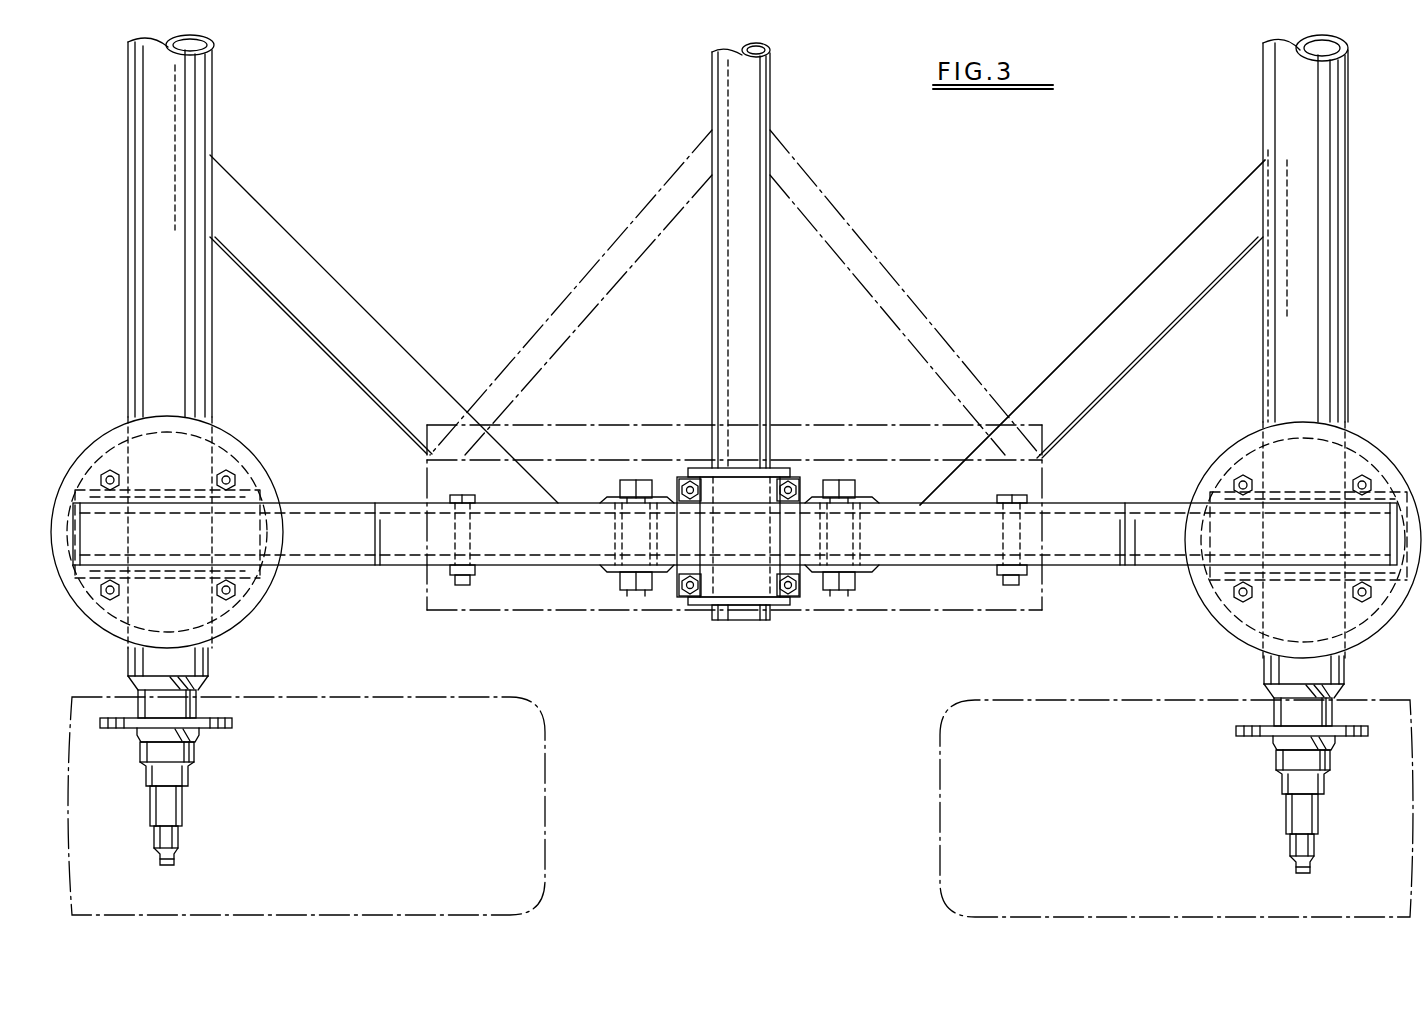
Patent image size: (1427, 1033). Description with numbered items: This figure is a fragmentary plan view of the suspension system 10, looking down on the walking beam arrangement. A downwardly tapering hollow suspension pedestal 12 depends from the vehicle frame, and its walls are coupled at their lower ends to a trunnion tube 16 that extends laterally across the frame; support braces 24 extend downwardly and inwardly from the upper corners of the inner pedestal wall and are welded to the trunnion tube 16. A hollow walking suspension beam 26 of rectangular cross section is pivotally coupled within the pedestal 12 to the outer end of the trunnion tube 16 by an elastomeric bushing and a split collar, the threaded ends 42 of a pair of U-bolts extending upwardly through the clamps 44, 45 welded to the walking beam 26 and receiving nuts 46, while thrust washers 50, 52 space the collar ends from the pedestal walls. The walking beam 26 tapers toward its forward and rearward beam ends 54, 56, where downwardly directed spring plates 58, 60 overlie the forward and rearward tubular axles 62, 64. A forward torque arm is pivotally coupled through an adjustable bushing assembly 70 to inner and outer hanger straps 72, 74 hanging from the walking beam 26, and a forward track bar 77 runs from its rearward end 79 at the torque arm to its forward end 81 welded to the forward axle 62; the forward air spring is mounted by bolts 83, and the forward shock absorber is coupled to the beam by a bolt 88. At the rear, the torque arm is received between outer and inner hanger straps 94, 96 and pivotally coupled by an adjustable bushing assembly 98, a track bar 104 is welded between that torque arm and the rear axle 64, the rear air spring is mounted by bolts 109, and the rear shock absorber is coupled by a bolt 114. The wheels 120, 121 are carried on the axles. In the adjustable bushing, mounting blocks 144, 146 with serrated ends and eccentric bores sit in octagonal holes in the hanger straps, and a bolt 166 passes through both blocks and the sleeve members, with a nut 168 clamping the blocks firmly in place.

The suspension system 10 is at (728, 712).
The suspension pedestal 12 is at (568, 427).
The trunnion tube 16 is at (757, 110).
The support braces 24 is at (905, 294).
The walking suspension beam 26 is at (1128, 507).
The threaded ends 42 is at (756, 555).
The clamp 44 is at (770, 580).
The clamp 45 is at (746, 490).
The nuts 46 is at (703, 587).
The thrust washer 50 is at (702, 612).
The thrust washer 52 is at (778, 466).
The forward beam end 54 is at (1290, 527).
The rearward beam end 56 is at (170, 520).
The spring plate 58 is at (1375, 457).
The spring plate 60 is at (235, 460).
The forward tubular axle 62 is at (1282, 133).
The rearward tubular axle 64 is at (190, 117).
The adjustable bushing assembly 70 is at (838, 602).
The inner hanger strap 72 is at (875, 570).
The outer hanger strap 74 is at (882, 501).
The forward track bar 77 is at (1125, 320).
The rearward end 79 is at (945, 505).
The forward end 81 is at (1242, 198).
The bolts 83 is at (1357, 597).
The bolt 88 is at (1027, 500).
The outer hanger strap 94 is at (605, 572).
The inner hanger strap 96 is at (606, 500).
The adjustable bushing assembly 98 is at (655, 600).
The track bar 104 is at (300, 265).
The bolts 109 is at (235, 487).
The bolt 114 is at (455, 500).
The wheel 120 is at (935, 808).
The left wheel 121 is at (548, 805).
The mounting block 144 is at (605, 597).
The mounting block 146 is at (655, 500).
The bolt 166 is at (635, 600).
The nut 168 is at (632, 482).